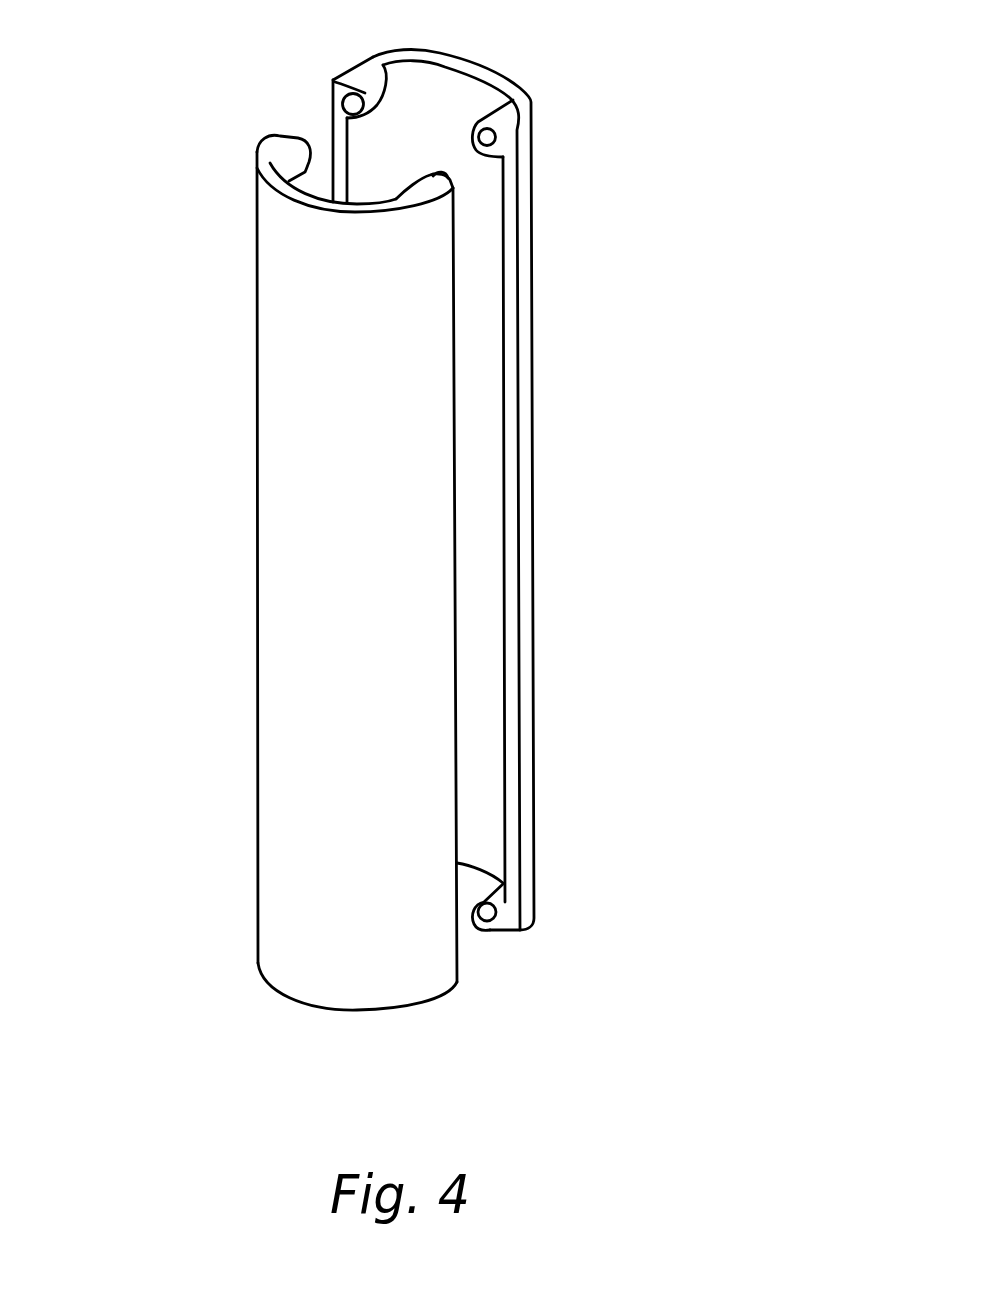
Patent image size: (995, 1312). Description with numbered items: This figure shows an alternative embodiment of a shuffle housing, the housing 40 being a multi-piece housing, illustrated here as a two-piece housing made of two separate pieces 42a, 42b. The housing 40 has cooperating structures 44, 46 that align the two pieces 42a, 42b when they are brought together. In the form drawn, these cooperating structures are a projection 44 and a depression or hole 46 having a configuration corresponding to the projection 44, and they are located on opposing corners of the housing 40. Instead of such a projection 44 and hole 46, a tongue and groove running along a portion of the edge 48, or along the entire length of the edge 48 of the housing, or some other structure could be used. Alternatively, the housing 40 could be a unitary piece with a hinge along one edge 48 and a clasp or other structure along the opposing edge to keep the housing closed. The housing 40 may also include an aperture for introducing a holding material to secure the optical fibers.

The housing 40 is at (622, 465).
The first housing piece 42a is at (267, 687).
The second housing piece 42b is at (533, 688).
The projection 44 is at (345, 105).
The depression or hole 46 is at (303, 150).
The edge 48 is at (510, 571).